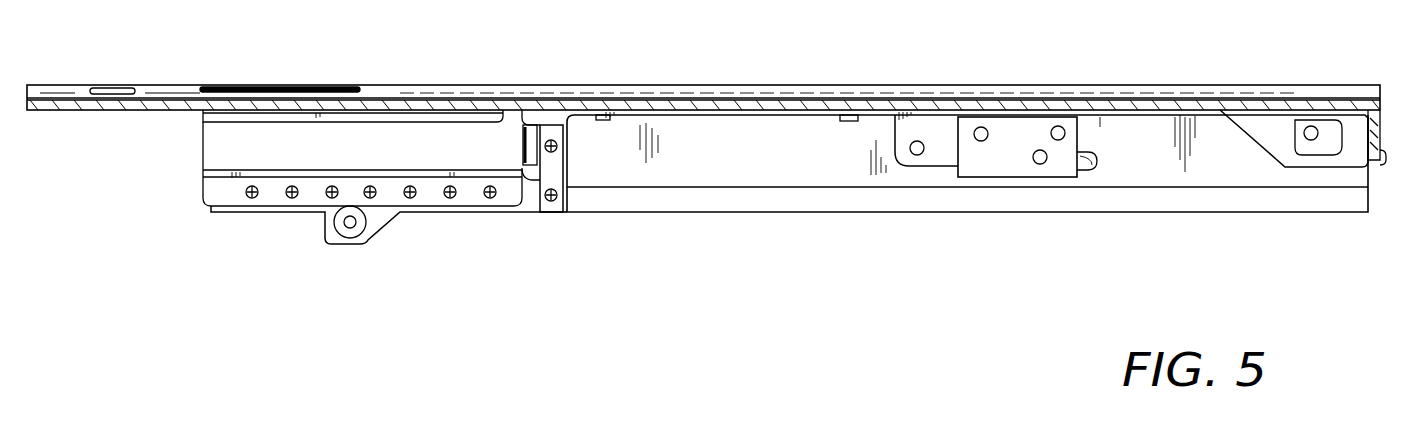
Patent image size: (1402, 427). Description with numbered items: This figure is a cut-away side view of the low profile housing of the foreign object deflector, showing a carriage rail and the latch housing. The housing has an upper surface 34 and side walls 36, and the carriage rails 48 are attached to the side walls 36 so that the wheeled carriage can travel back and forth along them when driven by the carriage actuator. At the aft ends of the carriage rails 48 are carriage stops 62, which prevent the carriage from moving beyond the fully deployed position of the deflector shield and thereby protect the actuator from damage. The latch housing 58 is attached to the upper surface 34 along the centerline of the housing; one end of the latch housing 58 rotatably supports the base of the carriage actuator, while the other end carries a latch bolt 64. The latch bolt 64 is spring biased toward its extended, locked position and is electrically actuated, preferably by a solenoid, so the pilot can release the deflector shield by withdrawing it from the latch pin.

The upper surface 34 is at (160, 93).
The side walls 36 is at (757, 175).
The carriage rails 48 is at (240, 122).
The latch housing 58 is at (988, 178).
The carriage stops 62 is at (566, 162).
The latch bolt 64 is at (1093, 168).